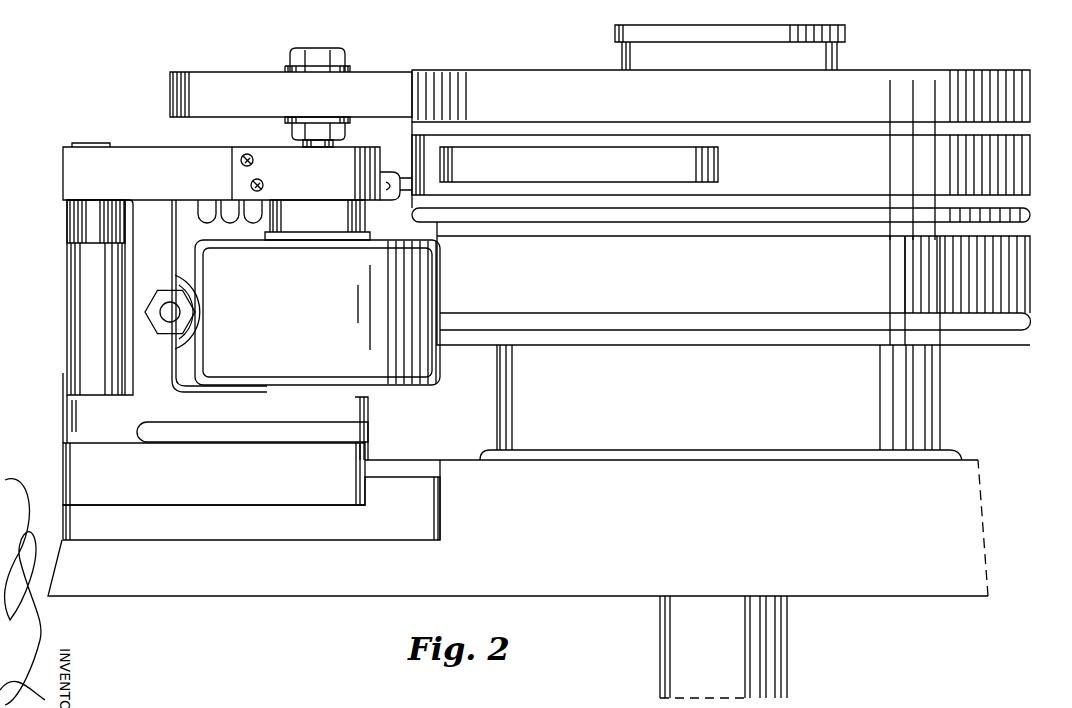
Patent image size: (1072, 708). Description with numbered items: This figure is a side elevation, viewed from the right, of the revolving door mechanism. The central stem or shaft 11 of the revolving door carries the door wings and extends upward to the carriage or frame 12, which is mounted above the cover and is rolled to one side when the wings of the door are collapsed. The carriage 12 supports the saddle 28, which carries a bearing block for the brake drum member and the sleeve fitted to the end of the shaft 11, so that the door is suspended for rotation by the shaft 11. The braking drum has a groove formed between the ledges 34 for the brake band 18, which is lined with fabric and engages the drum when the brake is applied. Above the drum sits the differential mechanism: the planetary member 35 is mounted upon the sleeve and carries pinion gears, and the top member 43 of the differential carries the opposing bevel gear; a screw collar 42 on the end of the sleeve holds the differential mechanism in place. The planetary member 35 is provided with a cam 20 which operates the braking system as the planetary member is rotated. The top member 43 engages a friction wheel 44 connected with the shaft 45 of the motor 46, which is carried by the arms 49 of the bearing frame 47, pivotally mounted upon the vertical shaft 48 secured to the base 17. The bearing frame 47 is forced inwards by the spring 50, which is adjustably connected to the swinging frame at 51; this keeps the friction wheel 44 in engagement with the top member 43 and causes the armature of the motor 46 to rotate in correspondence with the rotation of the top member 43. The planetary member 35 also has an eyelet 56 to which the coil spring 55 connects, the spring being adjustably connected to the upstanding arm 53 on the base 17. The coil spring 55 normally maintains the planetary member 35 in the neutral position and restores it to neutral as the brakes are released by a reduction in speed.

The central stem or shaft 11 is at (723, 647).
The carriage or frame 12 is at (518, 528).
The base 17 is at (214, 474).
The brake band 18 is at (733, 283).
The cam 20 is at (579, 164).
The saddle 28 is at (721, 402).
The ledges 34 is at (806, 225).
The planetary member 35 is at (721, 165).
The screw collar 42 is at (758, 14).
The top member 43 is at (721, 155).
The friction wheel 44 is at (291, 94).
The shaft 45 is at (300, 140).
The motor 46 is at (317, 312).
The bearing frame 47 is at (221, 303).
The vertical shaft 48 is at (112, 145).
The arms 49 is at (146, 297).
The spring 50 is at (177, 352).
The adjustable connection 51 is at (168, 300).
The upstanding arm 53 is at (66, 265).
The coil spring 55 is at (201, 208).
The eyelet 56 is at (392, 200).